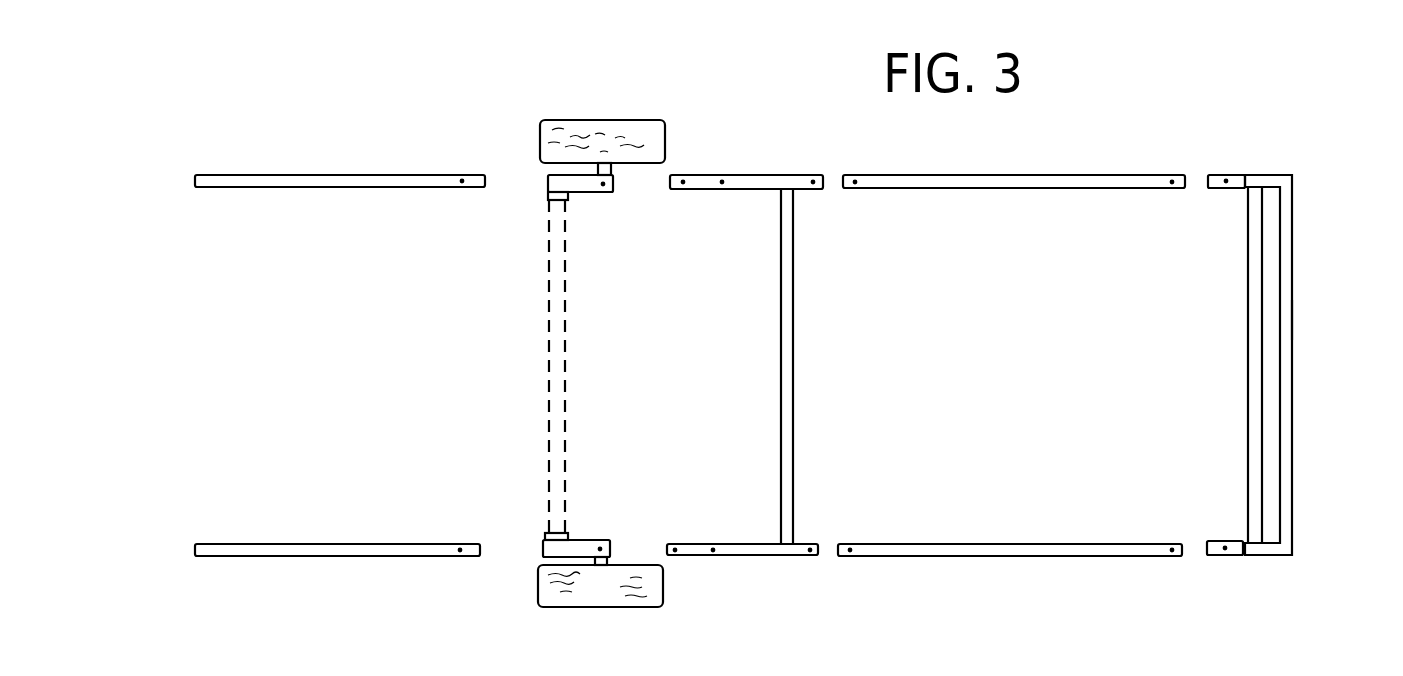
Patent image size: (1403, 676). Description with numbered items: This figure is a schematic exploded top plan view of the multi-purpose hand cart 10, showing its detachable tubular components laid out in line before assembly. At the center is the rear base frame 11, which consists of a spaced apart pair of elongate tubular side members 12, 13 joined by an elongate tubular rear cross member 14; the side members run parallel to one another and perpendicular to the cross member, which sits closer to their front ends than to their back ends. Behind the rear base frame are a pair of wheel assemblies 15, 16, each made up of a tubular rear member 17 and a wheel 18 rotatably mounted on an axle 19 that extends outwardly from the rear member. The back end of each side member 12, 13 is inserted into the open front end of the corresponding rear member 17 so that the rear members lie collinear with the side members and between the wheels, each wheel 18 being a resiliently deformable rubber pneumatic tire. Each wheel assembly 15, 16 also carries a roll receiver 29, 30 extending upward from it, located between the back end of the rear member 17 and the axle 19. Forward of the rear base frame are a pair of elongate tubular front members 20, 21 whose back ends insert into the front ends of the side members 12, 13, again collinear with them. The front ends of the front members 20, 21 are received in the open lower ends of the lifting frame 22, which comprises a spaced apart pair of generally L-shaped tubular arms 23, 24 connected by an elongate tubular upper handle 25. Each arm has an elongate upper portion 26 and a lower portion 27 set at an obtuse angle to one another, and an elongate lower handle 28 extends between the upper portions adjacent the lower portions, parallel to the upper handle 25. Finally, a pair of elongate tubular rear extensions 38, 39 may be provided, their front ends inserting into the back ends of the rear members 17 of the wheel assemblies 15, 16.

The multi-purpose hand cart 10 is at (1130, 97).
The rear base frame 11 is at (812, 312).
The side member of the rear base frame 12 is at (800, 175).
The side member of the rear base frame 13 is at (762, 556).
The rear cross member 14 is at (793, 452).
The wheel assembly 15 is at (593, 110).
The wheel assembly 16 is at (637, 528).
The rear member 17 is at (590, 200).
The wheel 18 is at (665, 138).
The axle 19 is at (560, 173).
The front member 20 is at (997, 175).
The front member 21 is at (907, 556).
The lifting frame 22 is at (1232, 388).
The arm of the lifting frame 23 is at (1280, 175).
The arm of the lifting frame 24 is at (1268, 556).
The upper handle 25 is at (1292, 330).
The upper portion of the arm 26 is at (1258, 175).
The lower portion of the arm 27 is at (1205, 175).
The lower handle 28 is at (1248, 265).
The roll receiver 29 is at (538, 208).
The roll receiver 30 is at (538, 524).
The rear extension 38 is at (297, 187).
The rear extension 39 is at (307, 544).